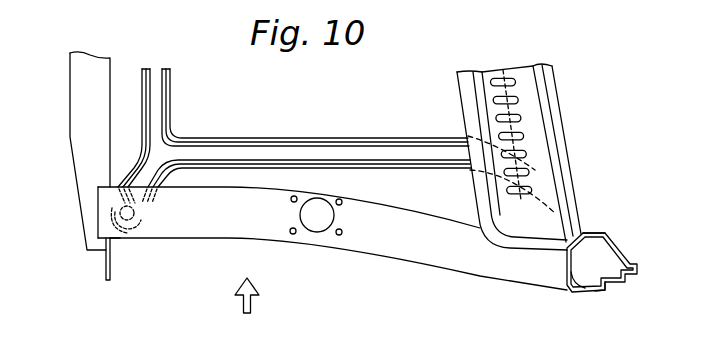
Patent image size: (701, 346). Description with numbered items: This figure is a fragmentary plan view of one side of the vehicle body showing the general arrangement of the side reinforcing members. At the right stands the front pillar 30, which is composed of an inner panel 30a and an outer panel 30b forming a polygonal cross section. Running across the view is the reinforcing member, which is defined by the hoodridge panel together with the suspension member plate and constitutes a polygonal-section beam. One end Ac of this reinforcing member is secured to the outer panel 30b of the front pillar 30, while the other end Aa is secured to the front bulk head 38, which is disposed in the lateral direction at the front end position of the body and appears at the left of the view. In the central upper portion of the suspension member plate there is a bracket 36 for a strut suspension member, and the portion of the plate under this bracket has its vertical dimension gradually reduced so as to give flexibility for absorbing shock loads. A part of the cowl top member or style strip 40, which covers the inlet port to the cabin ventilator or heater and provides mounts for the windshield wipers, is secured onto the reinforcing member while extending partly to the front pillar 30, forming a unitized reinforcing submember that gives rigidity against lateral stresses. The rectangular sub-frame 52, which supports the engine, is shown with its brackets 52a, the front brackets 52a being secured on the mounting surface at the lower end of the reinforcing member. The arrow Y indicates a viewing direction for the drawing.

The front pillar 30 is at (620, 248).
The inner panel 30a is at (604, 233).
The outer panel 30b is at (606, 290).
The bracket 36 is at (318, 238).
The front bulk head 38 is at (80, 123).
The cowl top member 40 is at (458, 93).
The sub-frame 52 is at (257, 153).
The bracket 52a is at (135, 228).
The end of reinforcing member Aa is at (120, 242).
The end of reinforcing member Ac is at (585, 288).
The direction Y is at (247, 311).